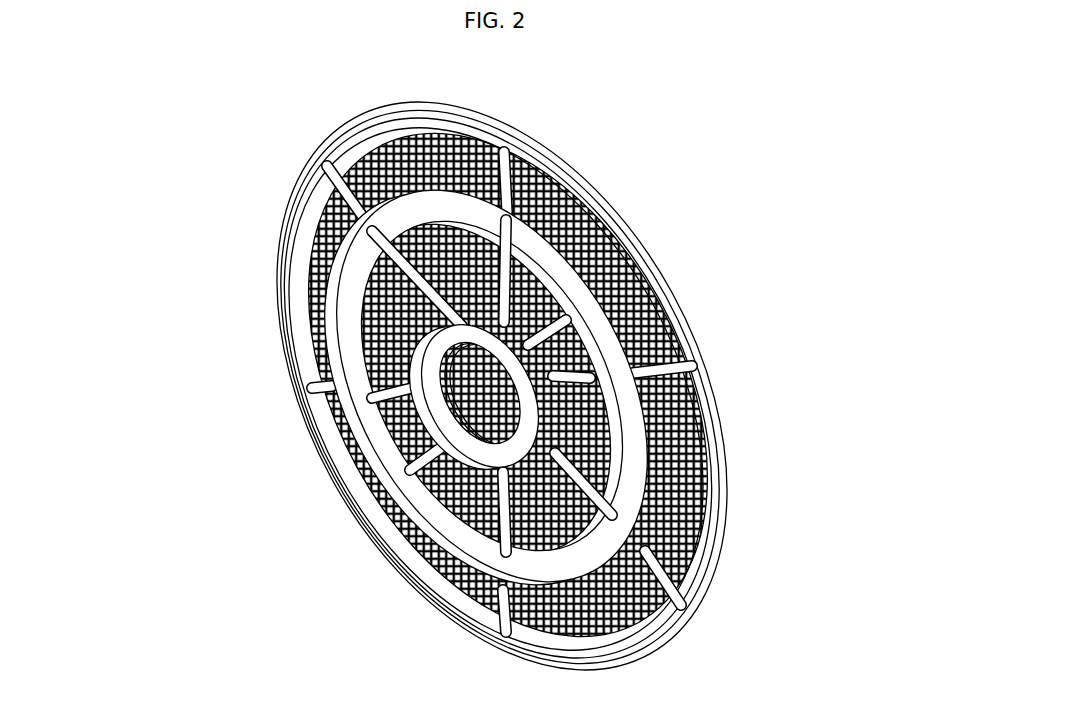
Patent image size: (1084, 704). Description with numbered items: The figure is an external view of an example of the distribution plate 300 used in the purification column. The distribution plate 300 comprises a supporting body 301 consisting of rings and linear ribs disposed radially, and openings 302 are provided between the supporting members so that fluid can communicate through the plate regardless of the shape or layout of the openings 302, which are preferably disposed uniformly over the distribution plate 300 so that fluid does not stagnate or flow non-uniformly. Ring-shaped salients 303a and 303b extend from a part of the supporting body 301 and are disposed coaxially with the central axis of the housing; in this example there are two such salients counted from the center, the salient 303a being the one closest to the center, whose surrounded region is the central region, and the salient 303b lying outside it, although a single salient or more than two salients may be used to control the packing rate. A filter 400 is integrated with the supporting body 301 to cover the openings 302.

The distribution plate 300 is at (648, 232).
The supporting body 301 is at (287, 227).
The openings 302 is at (367, 147).
The ring-shaped salient 303a is at (433, 362).
The ring-shaped salient 303b is at (407, 503).
The filter 400 is at (700, 507).